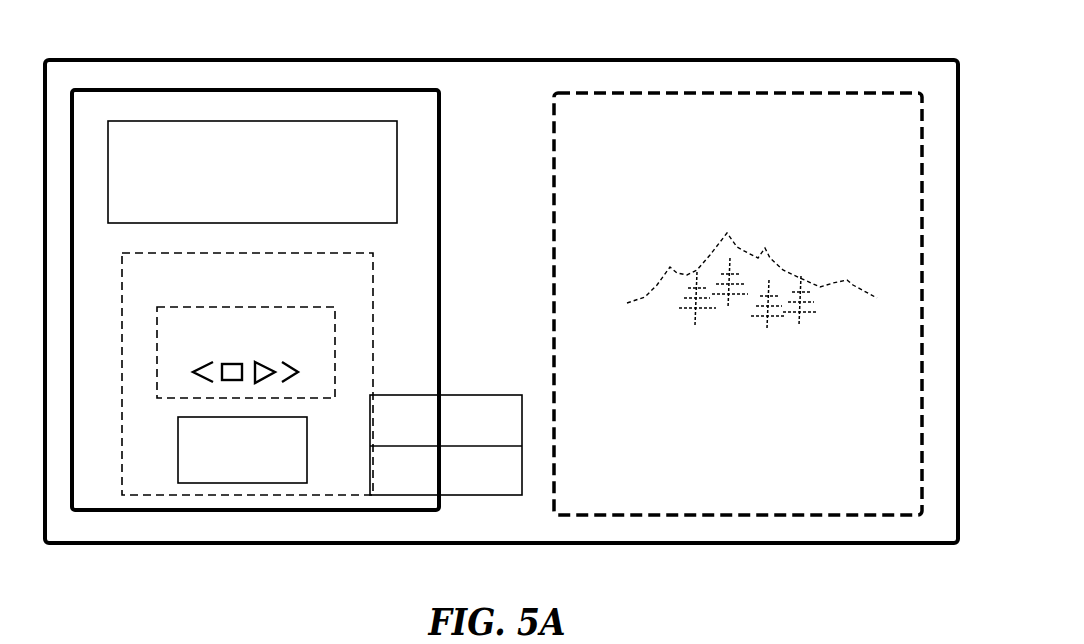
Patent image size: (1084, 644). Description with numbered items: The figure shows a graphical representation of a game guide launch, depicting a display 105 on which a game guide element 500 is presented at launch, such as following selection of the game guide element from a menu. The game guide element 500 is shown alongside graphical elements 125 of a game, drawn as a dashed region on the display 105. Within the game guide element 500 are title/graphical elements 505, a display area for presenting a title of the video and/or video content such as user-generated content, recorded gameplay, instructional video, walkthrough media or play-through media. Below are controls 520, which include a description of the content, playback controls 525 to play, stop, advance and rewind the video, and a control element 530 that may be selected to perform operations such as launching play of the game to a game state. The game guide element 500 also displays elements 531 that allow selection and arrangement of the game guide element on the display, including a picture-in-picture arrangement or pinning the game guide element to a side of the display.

The display 105 is at (849, 60).
The graphical elements 125 is at (706, 215).
The game guide element 500 is at (440, 142).
The title/graphical elements 505 is at (397, 207).
The controls 520 is at (365, 275).
The playback controls 525 is at (335, 360).
The control element 530 is at (178, 428).
The elements 531 is at (478, 372).